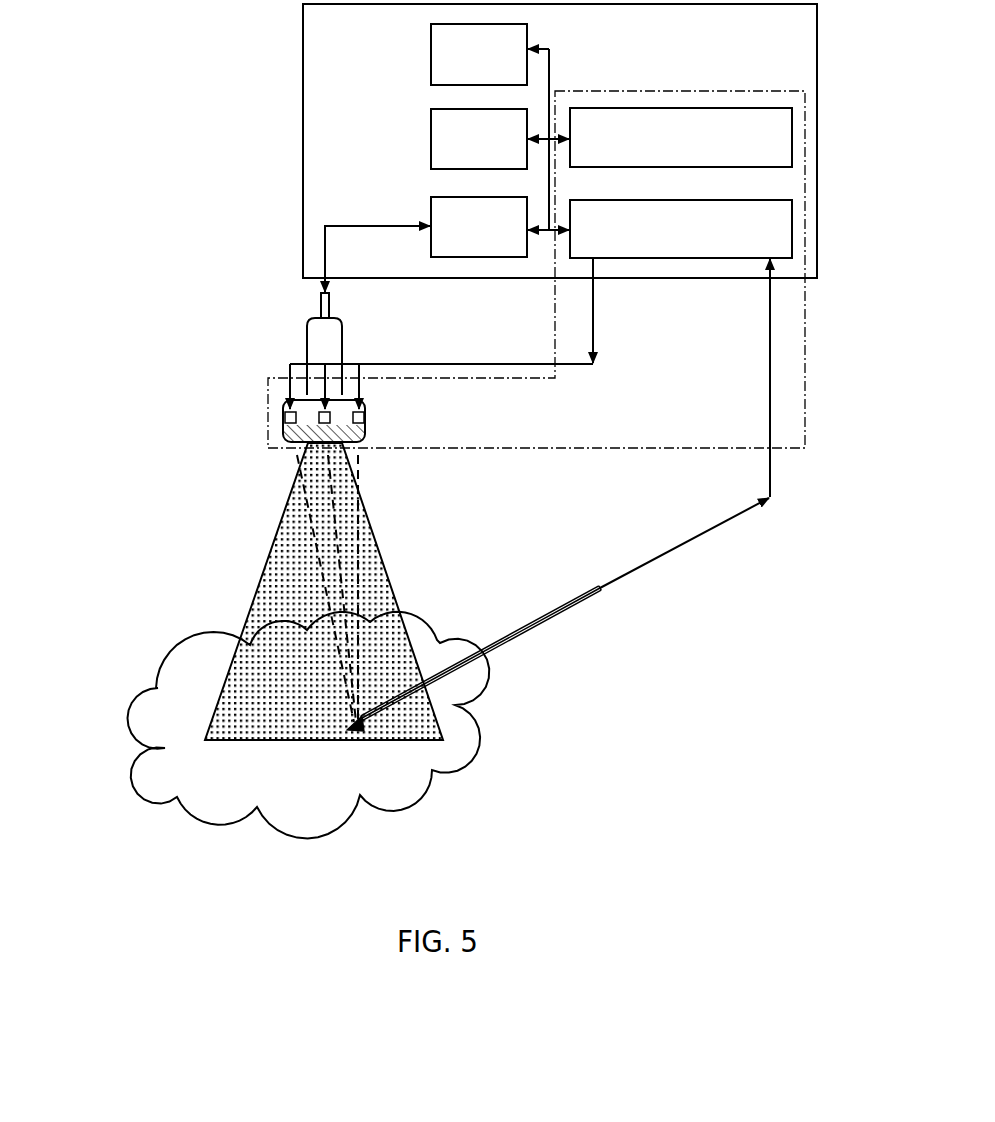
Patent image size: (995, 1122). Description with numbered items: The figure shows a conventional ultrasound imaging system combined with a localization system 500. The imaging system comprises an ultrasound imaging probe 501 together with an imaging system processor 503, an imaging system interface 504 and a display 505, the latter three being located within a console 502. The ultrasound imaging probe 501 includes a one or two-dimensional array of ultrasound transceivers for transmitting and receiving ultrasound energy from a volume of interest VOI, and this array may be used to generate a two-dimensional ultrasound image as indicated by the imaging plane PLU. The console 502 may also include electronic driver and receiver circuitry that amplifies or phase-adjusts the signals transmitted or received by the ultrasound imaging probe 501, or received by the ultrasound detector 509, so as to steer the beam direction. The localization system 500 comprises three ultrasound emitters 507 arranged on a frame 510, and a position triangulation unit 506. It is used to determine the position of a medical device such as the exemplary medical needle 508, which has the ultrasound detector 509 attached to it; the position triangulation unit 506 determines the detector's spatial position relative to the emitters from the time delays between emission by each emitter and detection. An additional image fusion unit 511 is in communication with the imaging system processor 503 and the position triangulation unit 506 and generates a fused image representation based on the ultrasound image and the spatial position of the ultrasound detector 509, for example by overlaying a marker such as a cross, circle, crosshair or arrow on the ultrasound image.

The localization system 500 is at (805, 372).
The ultrasound imaging probe 501 is at (306, 336).
The console 502 is at (303, 90).
The imaging system processor 503 is at (479, 227).
The imaging system interface 504 is at (479, 139).
The display 505 is at (479, 54).
The position triangulation unit 506 is at (681, 229).
The ultrasound emitters 507 is at (284, 426).
The medical needle 508 is at (528, 642).
The ultrasound detector 509 is at (367, 730).
The frame 510 is at (283, 442).
The image fusion unit 511 is at (681, 137).
The imaging plane PLU is at (222, 688).
The volume of interest VOI is at (415, 805).